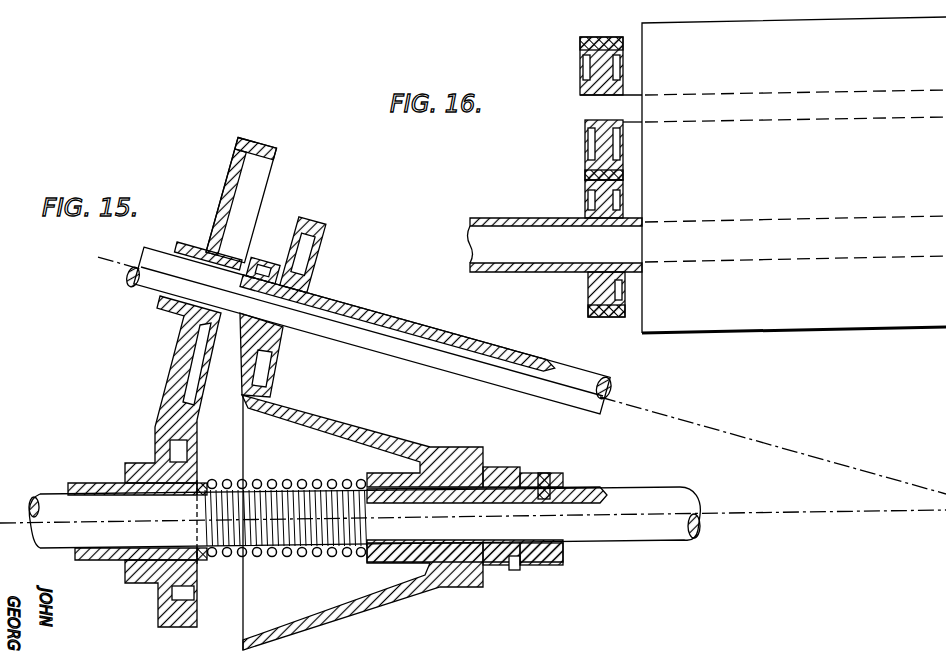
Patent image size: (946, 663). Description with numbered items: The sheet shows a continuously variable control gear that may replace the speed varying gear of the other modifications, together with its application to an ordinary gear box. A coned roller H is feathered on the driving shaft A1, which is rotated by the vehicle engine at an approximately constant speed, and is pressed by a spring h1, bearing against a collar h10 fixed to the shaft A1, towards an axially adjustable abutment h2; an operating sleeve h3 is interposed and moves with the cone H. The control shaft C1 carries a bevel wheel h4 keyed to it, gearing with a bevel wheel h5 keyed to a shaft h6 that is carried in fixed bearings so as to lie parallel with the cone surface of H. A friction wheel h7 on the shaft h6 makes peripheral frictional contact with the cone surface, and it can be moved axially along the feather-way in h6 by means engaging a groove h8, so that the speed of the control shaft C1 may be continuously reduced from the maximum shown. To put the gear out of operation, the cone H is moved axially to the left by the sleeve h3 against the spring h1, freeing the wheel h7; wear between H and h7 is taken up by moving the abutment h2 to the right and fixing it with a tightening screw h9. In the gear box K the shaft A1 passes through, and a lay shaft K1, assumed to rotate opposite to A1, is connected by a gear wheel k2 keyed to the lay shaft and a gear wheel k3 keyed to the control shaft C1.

In FIG. 15, the spring h1 is at (340, 548).
In FIG. 15, the axially adjustable abutment h2 is at (563, 561).
In FIG. 15, the operating sleeve h3 is at (522, 572).
In FIG. 15, the bevel wheel h4 is at (165, 607).
In FIG. 15, the bevel wheel h5 is at (183, 358).
In FIG. 15, the shaft h6 is at (589, 377).
In FIG. 15, the friction wheel h7 is at (318, 234).
In FIG. 15, the groove h8 is at (268, 256).
In FIG. 15, the tightening screw h9 is at (560, 480).
In FIG. 15, the collar h10 is at (200, 508).
In FIG. 15, the coned roller H is at (456, 576).
In FIG. 15, the driving shaft A1 is at (661, 528).
In FIG. 16, the driving shaft A1 is at (846, 247).
In FIG. 15, the control shaft C1 is at (96, 560).
In FIG. 16, the control shaft C1 is at (503, 206).
In FIG. 16, the gear box K is at (794, 175).
In FIG. 16, the lay shaft K1 is at (831, 108).
In FIG. 16, the gear wheel k2 is at (603, 147).
In FIG. 16, the gear wheel k3 is at (603, 290).